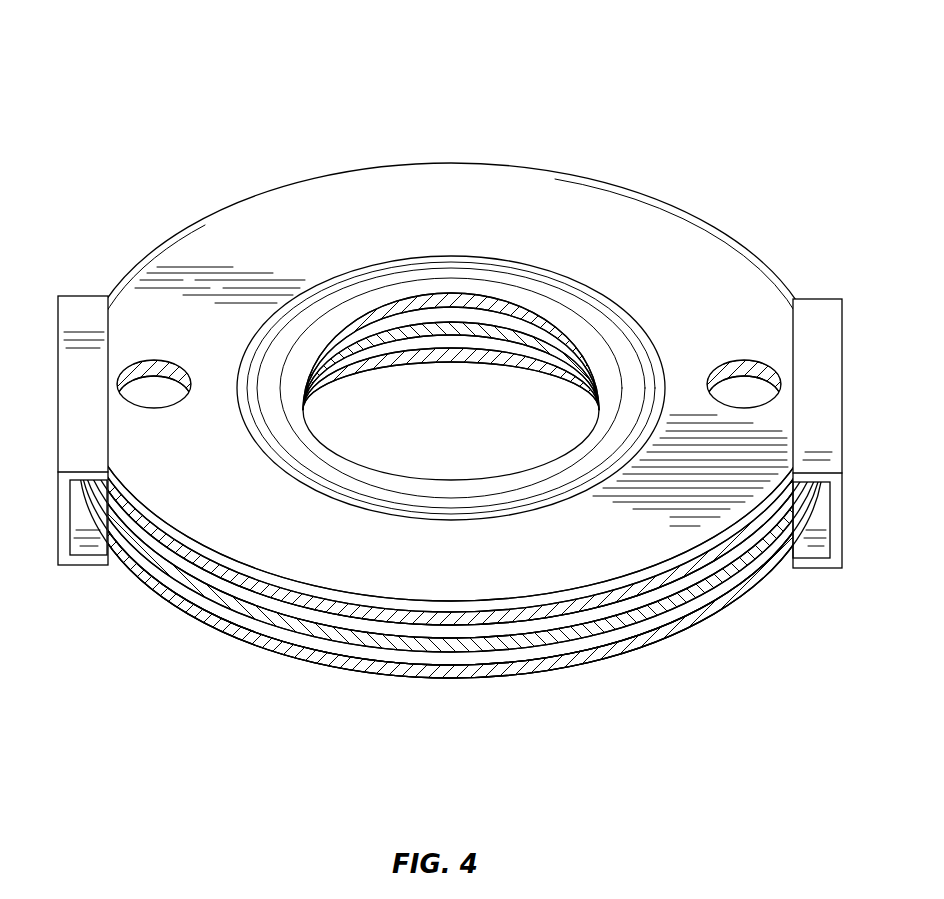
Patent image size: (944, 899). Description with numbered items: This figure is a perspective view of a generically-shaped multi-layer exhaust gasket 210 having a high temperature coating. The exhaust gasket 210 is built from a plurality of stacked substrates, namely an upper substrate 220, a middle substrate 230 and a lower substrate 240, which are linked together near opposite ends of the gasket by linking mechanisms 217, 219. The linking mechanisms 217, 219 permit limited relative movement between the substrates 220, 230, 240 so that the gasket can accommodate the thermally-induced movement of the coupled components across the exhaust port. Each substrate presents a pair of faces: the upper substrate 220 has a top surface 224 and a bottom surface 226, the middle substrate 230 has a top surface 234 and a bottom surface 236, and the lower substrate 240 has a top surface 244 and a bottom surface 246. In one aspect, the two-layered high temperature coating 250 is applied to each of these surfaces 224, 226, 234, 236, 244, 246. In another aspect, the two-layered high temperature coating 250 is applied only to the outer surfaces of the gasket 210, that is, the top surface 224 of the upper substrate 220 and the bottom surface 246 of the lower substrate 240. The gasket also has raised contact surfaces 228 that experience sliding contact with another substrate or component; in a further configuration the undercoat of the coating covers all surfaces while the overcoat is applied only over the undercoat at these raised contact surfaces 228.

The exhaust gasket 210 is at (140, 119).
The two-layered high temperature coating 250 is at (260, 235).
The raised contact surfaces 228 is at (493, 254).
The linking mechanism 219 is at (858, 306).
The linking mechanism 217 is at (57, 555).
The upper substrate 220 is at (690, 563).
The top surface of the upper substrate 224 is at (217, 539).
The bottom surface of the upper substrate 226 is at (217, 598).
The middle substrate 230 is at (620, 626).
The top surface of the middle substrate 234 is at (300, 598).
The bottom surface of the middle substrate 236 is at (298, 656).
The lower substrate 240 is at (545, 665).
The top surface of the lower substrate 244 is at (401, 642).
The bottom surface of the lower substrate 246 is at (399, 698).